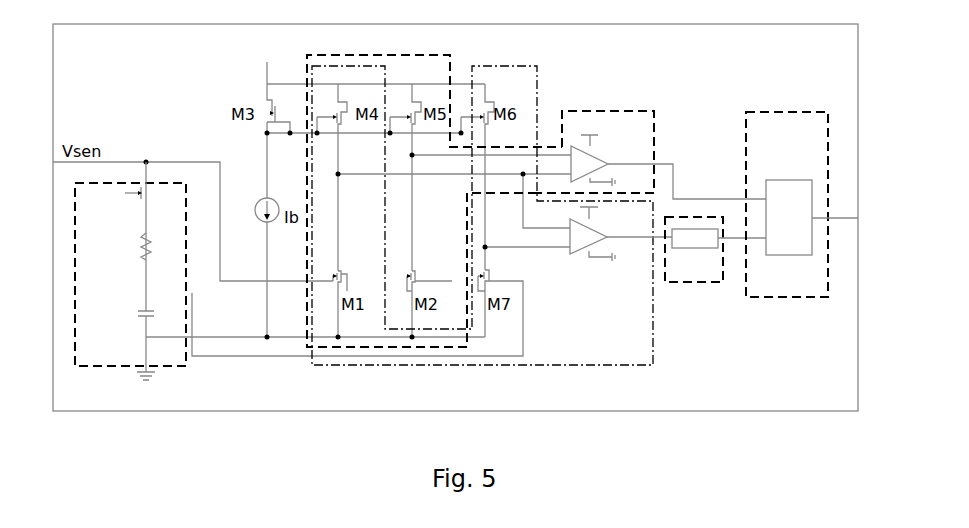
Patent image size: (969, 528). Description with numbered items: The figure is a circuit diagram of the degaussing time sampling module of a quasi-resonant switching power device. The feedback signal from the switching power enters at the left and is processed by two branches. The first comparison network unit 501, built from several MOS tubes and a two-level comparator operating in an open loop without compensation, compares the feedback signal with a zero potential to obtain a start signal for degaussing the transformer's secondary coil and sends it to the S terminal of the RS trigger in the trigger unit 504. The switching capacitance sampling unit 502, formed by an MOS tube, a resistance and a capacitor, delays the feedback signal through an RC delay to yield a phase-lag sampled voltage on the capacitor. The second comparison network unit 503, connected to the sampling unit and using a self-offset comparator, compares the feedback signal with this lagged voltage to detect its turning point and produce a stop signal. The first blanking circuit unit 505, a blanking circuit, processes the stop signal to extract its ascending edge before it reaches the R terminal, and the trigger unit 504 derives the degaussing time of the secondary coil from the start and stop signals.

The first comparison network unit 501 is at (600, 111).
The switching capacitance sampling unit 502 is at (168, 366).
The second comparison network unit 503 is at (560, 366).
The trigger unit 504 is at (793, 298).
The first blanking circuit unit 505 is at (688, 283).